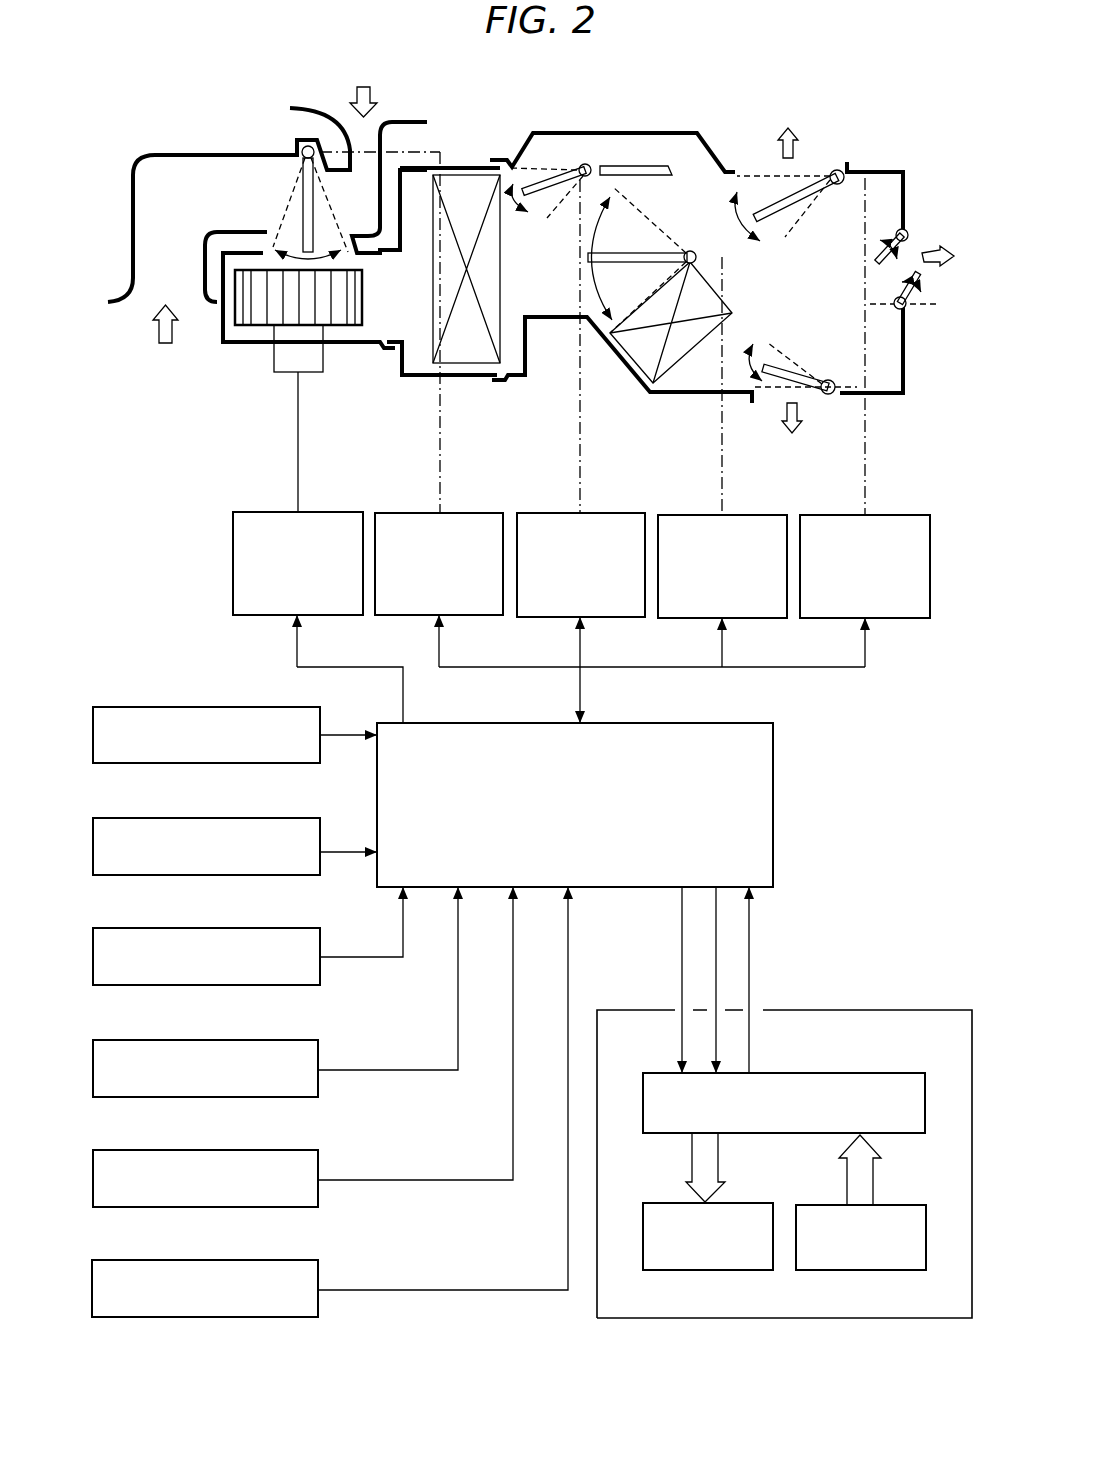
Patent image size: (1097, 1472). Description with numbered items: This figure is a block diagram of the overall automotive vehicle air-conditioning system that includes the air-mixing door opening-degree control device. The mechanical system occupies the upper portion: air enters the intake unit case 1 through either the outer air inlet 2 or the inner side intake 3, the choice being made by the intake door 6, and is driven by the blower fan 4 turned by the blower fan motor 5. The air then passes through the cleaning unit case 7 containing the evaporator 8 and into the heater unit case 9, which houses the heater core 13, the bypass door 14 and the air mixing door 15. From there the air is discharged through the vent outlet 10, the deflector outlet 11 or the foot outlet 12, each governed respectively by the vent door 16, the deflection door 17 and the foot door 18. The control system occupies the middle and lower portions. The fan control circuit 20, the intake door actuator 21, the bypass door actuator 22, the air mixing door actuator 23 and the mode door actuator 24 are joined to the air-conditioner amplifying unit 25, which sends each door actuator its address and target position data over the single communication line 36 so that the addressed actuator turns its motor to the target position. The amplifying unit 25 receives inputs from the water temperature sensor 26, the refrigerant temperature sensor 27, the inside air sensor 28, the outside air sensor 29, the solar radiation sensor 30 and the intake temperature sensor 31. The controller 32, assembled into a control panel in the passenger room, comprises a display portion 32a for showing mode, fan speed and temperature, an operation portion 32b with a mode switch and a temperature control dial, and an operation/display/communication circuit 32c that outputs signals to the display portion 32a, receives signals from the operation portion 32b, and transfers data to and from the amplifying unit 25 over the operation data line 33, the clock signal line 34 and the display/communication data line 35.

The intake unit case 1 is at (230, 153).
The outer air inlet 2 is at (382, 113).
The inner side intake 3 is at (145, 293).
The blower fan 4 is at (250, 320).
The blower fan motor 5 is at (323, 367).
The intake door 6 is at (302, 195).
The cleaning unit case 7 is at (468, 380).
The evaporator 8 is at (433, 300).
The heater unit case 9 is at (667, 133).
The vent outlet 10 is at (810, 167).
The deflector outlet 11 is at (927, 263).
The foot outlet 12 is at (817, 402).
The heater core 13 is at (733, 313).
The bypass door 14 is at (533, 178).
The air mixing door 15 is at (613, 252).
The vent door 16 is at (800, 210).
The deflection door 17 is at (900, 293).
The foot door 18 is at (783, 367).
The fan control circuit 20 is at (342, 510).
The intake door actuator 21 is at (482, 510).
The bypass door actuator 22 is at (624, 512).
The air mixing door actuator 23 is at (765, 513).
The mode door actuator 24 is at (908, 513).
The air-conditioner amplifying unit 25 is at (775, 805).
The water temperature sensor 26 is at (150, 705).
The refrigerant temperature sensor 27 is at (150, 816).
The inside air sensor 28 is at (150, 926).
The outside air sensor 29 is at (150, 1038).
The solar radiation sensor 30 is at (150, 1148).
The intake temperature sensor 31 is at (150, 1258).
The controller 32 is at (843, 1008).
The display portion 32a is at (707, 1272).
The operation portion 32b is at (861, 1272).
The operation/display/communication circuit 32c is at (843, 1072).
The operation data line 33 is at (750, 923).
The clock signal line 34 is at (682, 923).
The display/communication data line 35 is at (716, 955).
The communication line 36 is at (801, 670).